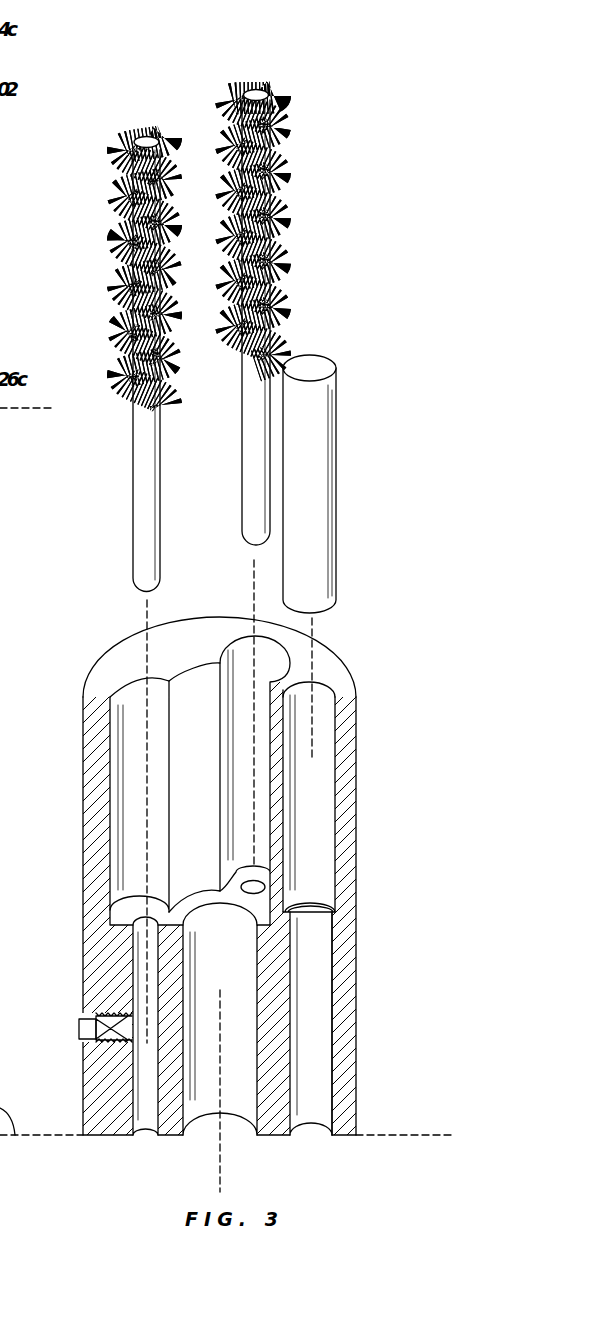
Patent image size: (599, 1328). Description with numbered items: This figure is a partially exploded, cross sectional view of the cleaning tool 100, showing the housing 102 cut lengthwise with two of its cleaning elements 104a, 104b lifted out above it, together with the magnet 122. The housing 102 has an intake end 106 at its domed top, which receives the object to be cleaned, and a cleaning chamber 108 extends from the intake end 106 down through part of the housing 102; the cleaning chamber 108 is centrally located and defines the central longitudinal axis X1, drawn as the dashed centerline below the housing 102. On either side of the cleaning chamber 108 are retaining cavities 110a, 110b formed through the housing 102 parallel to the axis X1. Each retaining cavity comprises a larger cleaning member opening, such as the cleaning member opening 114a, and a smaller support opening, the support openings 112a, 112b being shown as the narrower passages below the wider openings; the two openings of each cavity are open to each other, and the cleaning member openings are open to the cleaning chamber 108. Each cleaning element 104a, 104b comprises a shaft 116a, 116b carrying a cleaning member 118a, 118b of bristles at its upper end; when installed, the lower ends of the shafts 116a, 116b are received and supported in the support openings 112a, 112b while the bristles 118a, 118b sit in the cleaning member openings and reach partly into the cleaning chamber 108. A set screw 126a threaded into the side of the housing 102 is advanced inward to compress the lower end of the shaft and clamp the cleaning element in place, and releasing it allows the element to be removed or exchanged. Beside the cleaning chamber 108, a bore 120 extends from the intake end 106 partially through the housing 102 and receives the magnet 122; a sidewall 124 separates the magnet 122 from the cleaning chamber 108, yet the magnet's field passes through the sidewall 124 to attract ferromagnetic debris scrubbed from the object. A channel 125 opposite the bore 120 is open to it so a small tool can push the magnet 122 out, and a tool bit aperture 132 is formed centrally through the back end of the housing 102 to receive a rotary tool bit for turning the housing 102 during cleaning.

The cleaning tool 100 is at (362, 405).
The housing 102 is at (335, 676).
The cleaning element 104a is at (133, 214).
The cleaning element 104b is at (314, 189).
The intake end 106 is at (256, 657).
The cleaning chamber 108 is at (190, 700).
The retaining cavity 110a is at (134, 846).
The retaining cavity 110b is at (276, 659).
The support opening 112a is at (142, 1082).
The support opening 112b is at (252, 893).
The cleaning member opening 114a is at (132, 790).
The shaft 116a is at (133, 520).
The shaft 116b is at (246, 462).
The cleaning member 118a is at (108, 284).
The cleaning member 118b is at (288, 270).
The bore 120 is at (320, 848).
The magnet 122 is at (318, 508).
The sidewall 124 is at (280, 793).
The channel 125 is at (315, 1018).
The set screw 126a is at (80, 1027).
The tool bit aperture 132 is at (250, 1082).
The central longitudinal axis X1 is at (222, 1178).